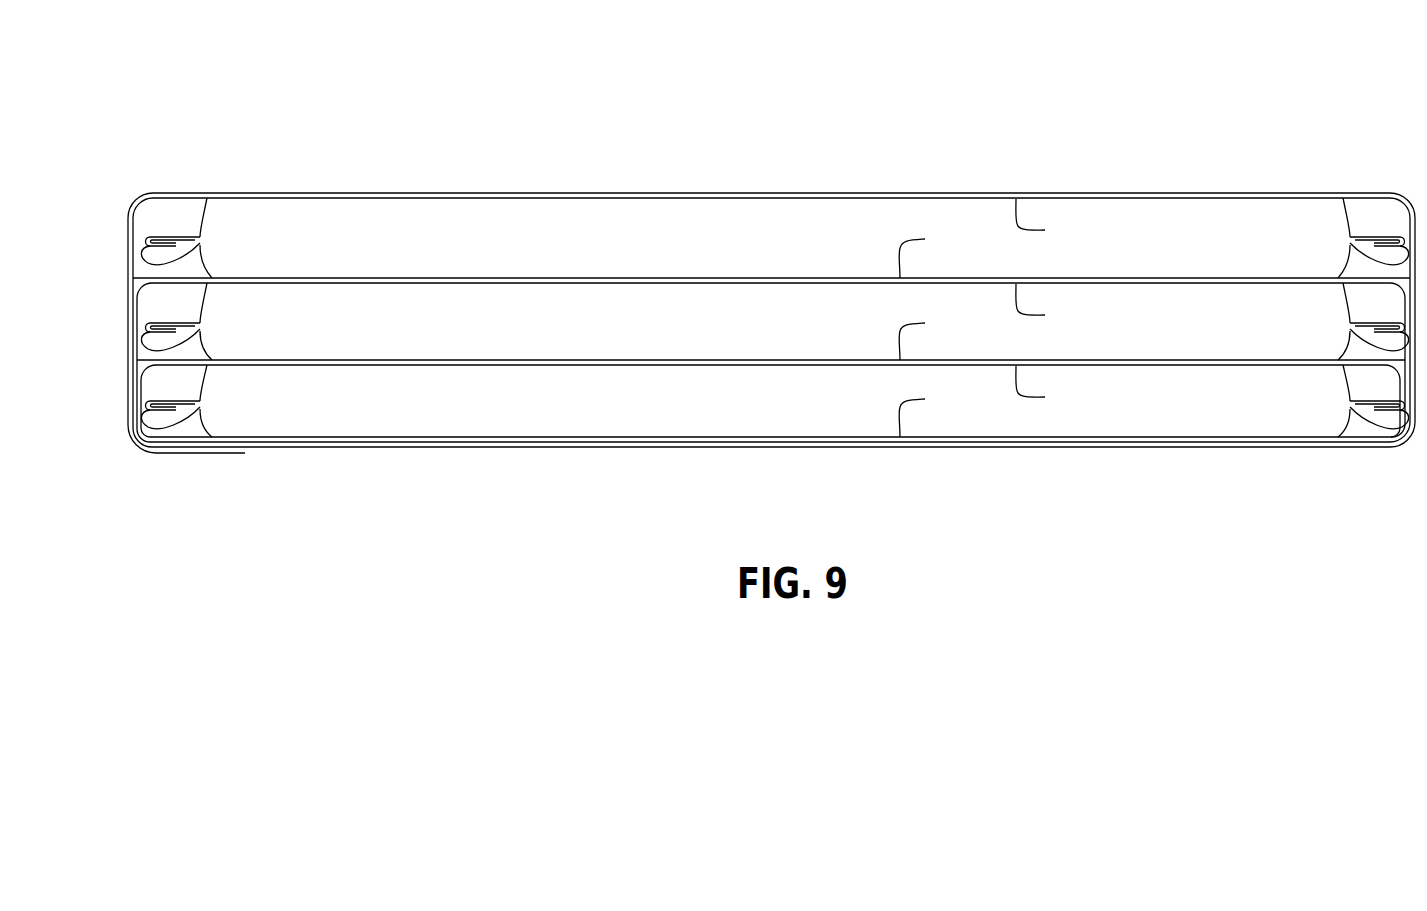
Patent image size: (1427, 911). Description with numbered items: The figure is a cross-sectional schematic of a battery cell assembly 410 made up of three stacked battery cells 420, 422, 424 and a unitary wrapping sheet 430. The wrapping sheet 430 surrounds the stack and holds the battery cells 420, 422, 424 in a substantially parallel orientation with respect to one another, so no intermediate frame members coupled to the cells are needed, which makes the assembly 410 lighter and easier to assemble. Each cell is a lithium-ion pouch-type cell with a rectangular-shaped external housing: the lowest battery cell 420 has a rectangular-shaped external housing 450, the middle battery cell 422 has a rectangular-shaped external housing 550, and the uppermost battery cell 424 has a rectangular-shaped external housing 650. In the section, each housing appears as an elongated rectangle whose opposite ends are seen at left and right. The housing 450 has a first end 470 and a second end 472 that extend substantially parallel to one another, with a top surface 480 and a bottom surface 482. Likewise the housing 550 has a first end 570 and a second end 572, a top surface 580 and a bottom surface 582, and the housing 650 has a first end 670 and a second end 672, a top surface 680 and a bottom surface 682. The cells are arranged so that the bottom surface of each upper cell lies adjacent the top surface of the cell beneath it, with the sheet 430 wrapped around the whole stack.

The battery cell assembly 410 is at (896, 120).
The unitary wrapping sheet 430 is at (655, 193).
The battery cell 420 is at (798, 419).
The battery cell 422 is at (798, 340).
The battery cell 424 is at (798, 258).
The rectangular-shaped external housing 450 is at (1115, 407).
The rectangular-shaped external housing 550 is at (1171, 323).
The rectangular-shaped external housing 650 is at (1231, 243).
The first end 470 is at (127, 425).
The second end 472 is at (1397, 420).
The first end 570 is at (200, 337).
The second end 572 is at (1352, 331).
The first end 670 is at (200, 243).
The second end 672 is at (1350, 245).
The top surface 480 is at (1052, 390).
The bottom surface 482 is at (933, 409).
The top surface 580 is at (1052, 308).
The bottom surface 582 is at (933, 332).
The top surface 680 is at (1052, 223).
The bottom surface 682 is at (933, 249).